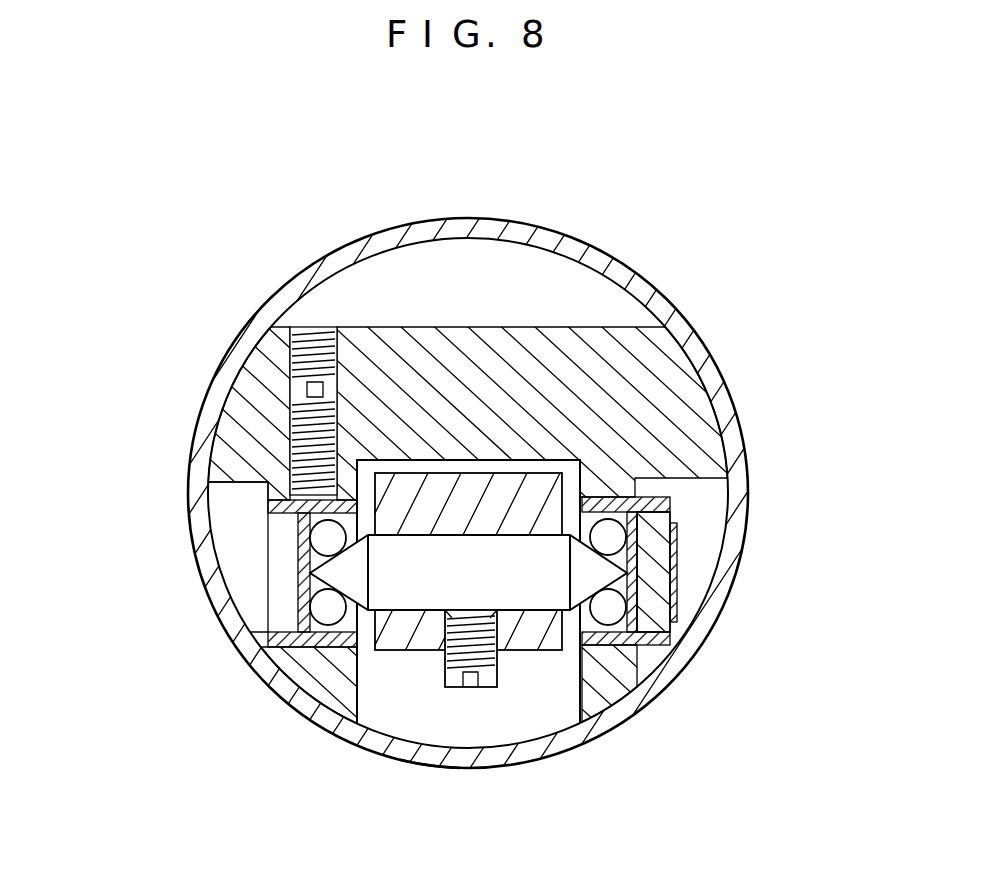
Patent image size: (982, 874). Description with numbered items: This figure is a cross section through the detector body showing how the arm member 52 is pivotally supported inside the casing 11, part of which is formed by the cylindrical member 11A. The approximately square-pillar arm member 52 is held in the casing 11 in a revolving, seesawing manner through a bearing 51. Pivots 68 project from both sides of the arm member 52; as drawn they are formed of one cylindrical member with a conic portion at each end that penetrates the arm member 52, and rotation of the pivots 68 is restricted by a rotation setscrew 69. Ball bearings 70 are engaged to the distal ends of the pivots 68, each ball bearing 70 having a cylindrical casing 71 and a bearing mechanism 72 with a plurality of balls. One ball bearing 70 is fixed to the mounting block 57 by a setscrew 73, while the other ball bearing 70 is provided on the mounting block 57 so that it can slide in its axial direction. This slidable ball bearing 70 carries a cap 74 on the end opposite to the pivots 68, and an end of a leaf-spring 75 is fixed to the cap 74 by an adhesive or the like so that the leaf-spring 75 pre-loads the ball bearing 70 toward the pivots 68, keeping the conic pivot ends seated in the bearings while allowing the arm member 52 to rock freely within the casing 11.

The casing 11 is at (575, 222).
The cylindrical member 11A is at (421, 752).
The bearing 51 is at (262, 600).
The arm member 52 is at (537, 647).
The mounting block 57 is at (457, 335).
The pivots 68 is at (358, 588).
The rotation setscrew 69 is at (488, 678).
The ball bearing 70 is at (453, 606).
The cylindrical casing 71 is at (285, 517).
The bearing mechanism 72 is at (302, 566).
The setscrew 73 is at (300, 425).
The cap 74 is at (650, 573).
The leaf-spring 75 is at (677, 538).